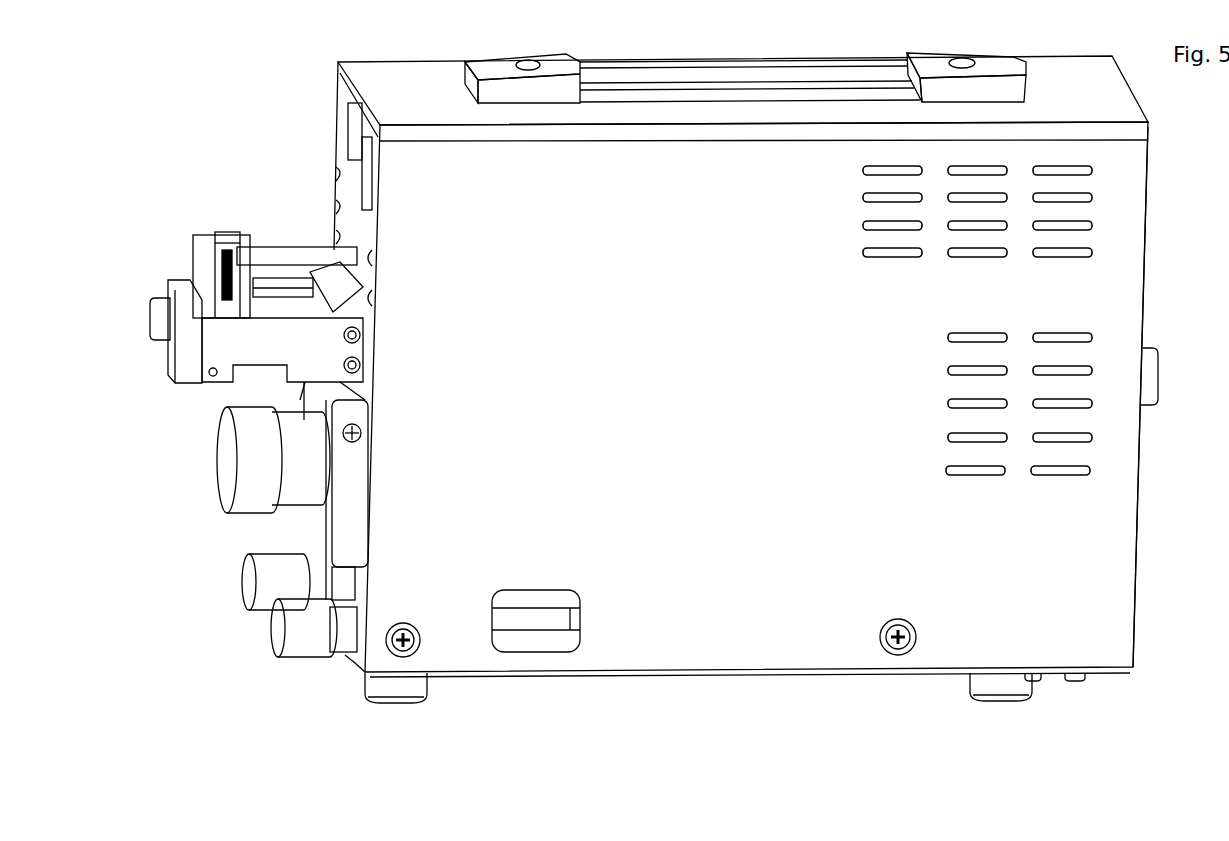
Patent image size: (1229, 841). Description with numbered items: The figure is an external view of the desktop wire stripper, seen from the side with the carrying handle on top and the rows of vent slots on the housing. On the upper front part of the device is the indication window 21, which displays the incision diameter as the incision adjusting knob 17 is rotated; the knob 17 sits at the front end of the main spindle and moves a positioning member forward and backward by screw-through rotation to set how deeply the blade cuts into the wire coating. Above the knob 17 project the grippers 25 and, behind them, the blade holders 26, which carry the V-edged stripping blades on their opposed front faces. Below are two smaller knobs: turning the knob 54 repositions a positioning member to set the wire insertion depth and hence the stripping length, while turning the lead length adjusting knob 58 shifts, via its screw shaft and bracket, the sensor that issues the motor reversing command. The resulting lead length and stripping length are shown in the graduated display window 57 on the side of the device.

The indication window 21 is at (345, 122).
The grippers 25 is at (200, 232).
The blade holders 26 is at (230, 225).
The incision adjusting knob 17 is at (250, 483).
The knob 54 is at (252, 602).
The lead length adjusting knob 58 is at (292, 640).
The display window 57 is at (578, 658).